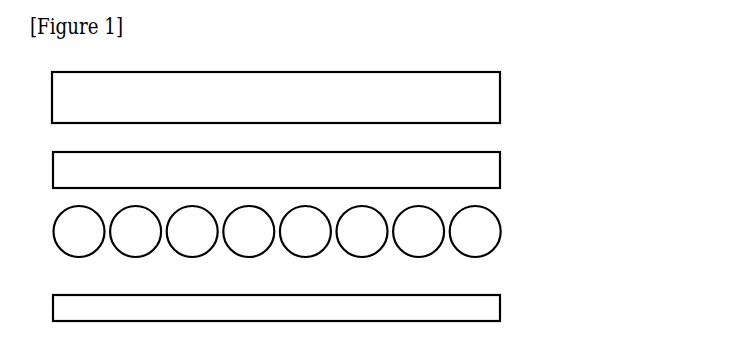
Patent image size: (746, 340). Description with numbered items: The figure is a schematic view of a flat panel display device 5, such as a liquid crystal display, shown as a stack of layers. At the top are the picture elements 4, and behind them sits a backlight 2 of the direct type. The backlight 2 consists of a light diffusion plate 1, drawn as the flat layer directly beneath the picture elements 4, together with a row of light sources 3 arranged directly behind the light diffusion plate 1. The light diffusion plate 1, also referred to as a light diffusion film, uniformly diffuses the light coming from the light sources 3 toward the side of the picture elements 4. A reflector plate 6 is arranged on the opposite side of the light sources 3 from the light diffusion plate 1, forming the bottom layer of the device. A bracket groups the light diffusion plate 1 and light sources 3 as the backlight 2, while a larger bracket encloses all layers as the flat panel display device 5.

The light diffusion plate 1 is at (512, 171).
The backlight 2 is at (347, 204).
The light sources 3 is at (314, 231).
The picture elements 4 is at (512, 98).
The flat panel display device 5 is at (379, 196).
The reflector plate 6 is at (314, 308).